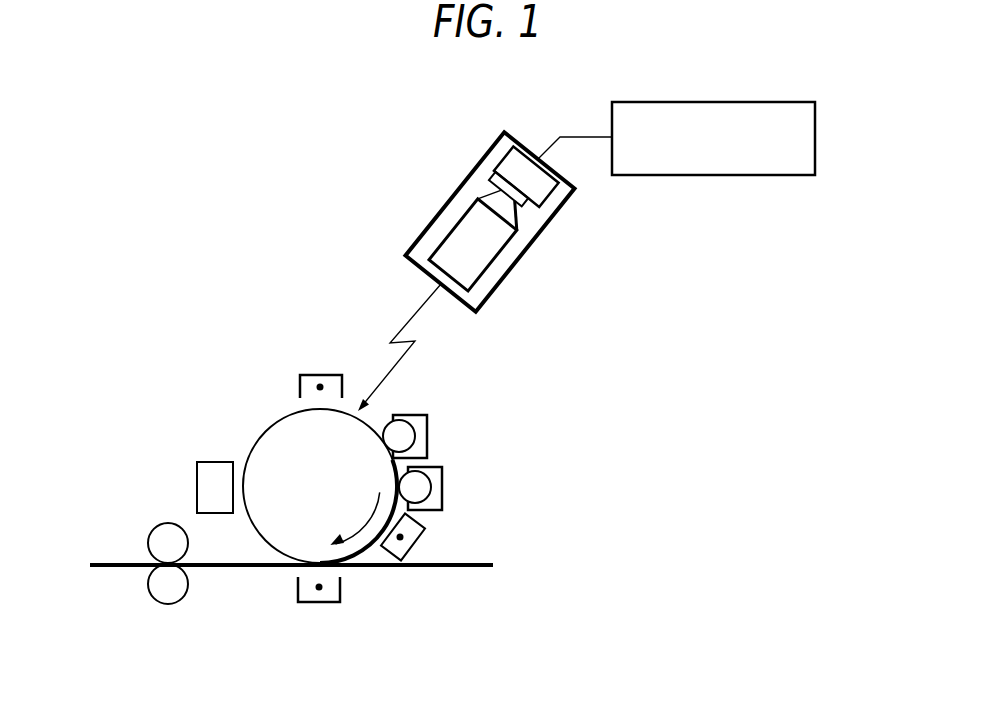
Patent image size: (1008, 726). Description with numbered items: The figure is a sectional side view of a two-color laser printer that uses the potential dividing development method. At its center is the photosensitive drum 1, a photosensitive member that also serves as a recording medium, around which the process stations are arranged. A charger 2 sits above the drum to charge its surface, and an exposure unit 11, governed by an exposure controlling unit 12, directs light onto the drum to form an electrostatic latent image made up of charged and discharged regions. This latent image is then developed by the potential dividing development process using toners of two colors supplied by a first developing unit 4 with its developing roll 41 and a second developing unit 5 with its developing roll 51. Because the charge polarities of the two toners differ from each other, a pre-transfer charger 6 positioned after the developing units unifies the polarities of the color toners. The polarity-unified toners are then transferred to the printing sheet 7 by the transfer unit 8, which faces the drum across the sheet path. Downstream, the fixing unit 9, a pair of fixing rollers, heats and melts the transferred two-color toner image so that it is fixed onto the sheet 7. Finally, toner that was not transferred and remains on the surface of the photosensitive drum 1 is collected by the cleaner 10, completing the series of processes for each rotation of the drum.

The photosensitive drum 1 is at (275, 425).
The charger 2 is at (318, 375).
The first developing unit 4 is at (427, 423).
The developing roll 41 is at (400, 413).
The second developing unit 5 is at (442, 500).
The developing roll 51 is at (442, 472).
The pre-transfer charger 6 is at (415, 542).
The printing sheet 7 is at (477, 570).
The transfer unit 8 is at (318, 602).
The fixing unit 9 is at (168, 604).
The cleaner 10 is at (215, 462).
The exposure unit 11 is at (456, 192).
The exposure controlling unit 12 is at (815, 137).